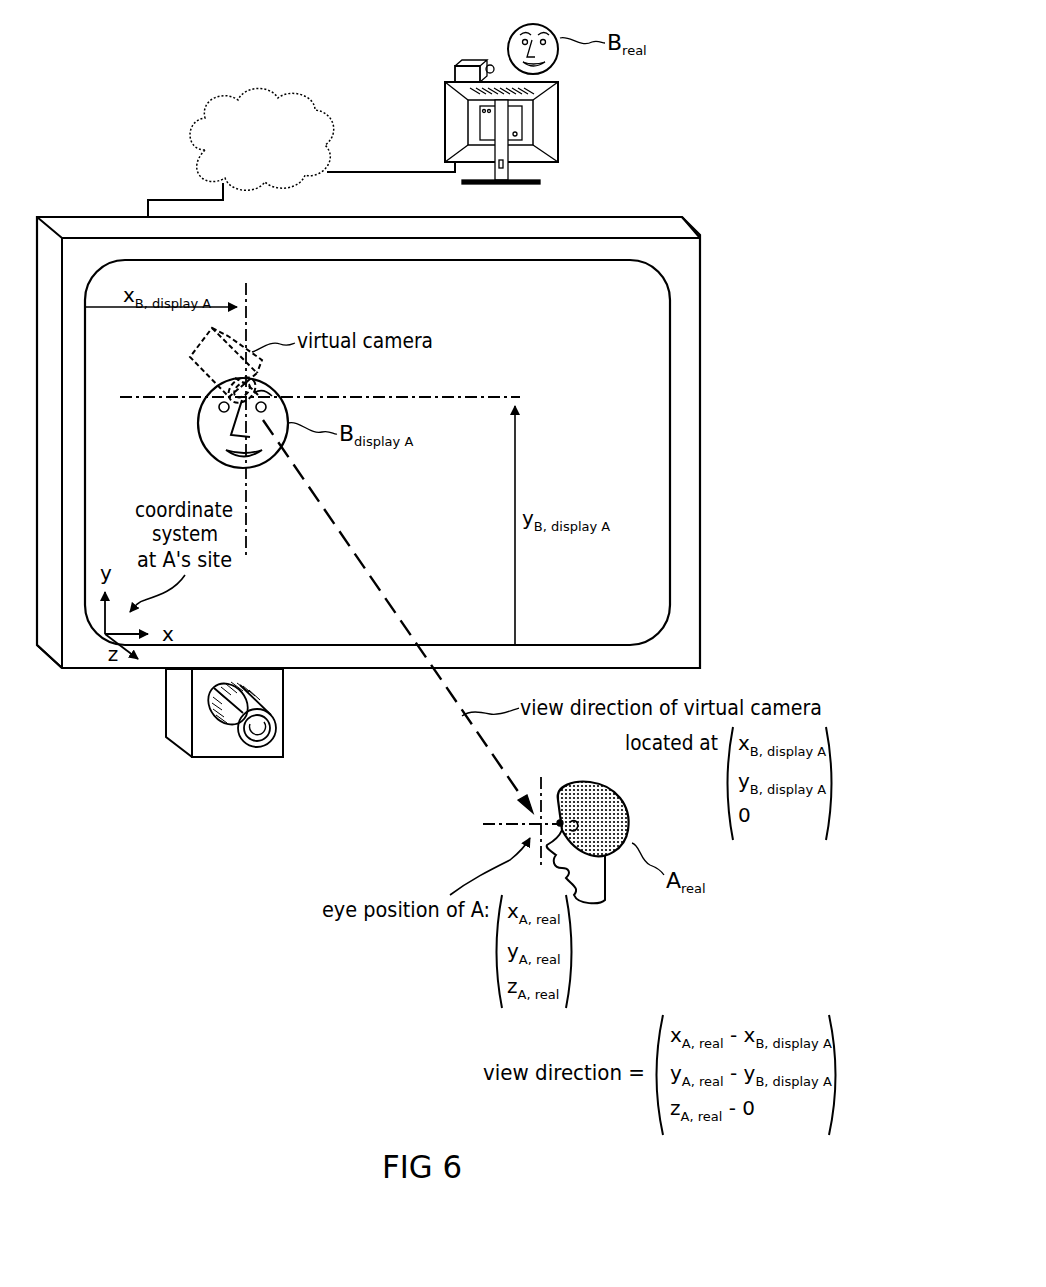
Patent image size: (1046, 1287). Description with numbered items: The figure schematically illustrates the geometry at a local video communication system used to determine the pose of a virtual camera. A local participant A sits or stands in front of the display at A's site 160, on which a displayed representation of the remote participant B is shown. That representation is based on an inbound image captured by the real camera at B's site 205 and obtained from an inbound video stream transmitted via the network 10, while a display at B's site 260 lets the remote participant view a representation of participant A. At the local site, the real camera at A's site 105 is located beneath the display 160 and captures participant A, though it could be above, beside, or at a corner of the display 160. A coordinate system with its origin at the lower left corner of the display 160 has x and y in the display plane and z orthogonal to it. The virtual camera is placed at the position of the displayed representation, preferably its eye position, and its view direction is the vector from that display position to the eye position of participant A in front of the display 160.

The network 10 is at (277, 165).
The real camera at A's site 105 is at (166, 716).
The display at A's site 160 is at (553, 217).
The real camera at B's site 205 is at (455, 72).
The display at B's site 260 is at (558, 120).